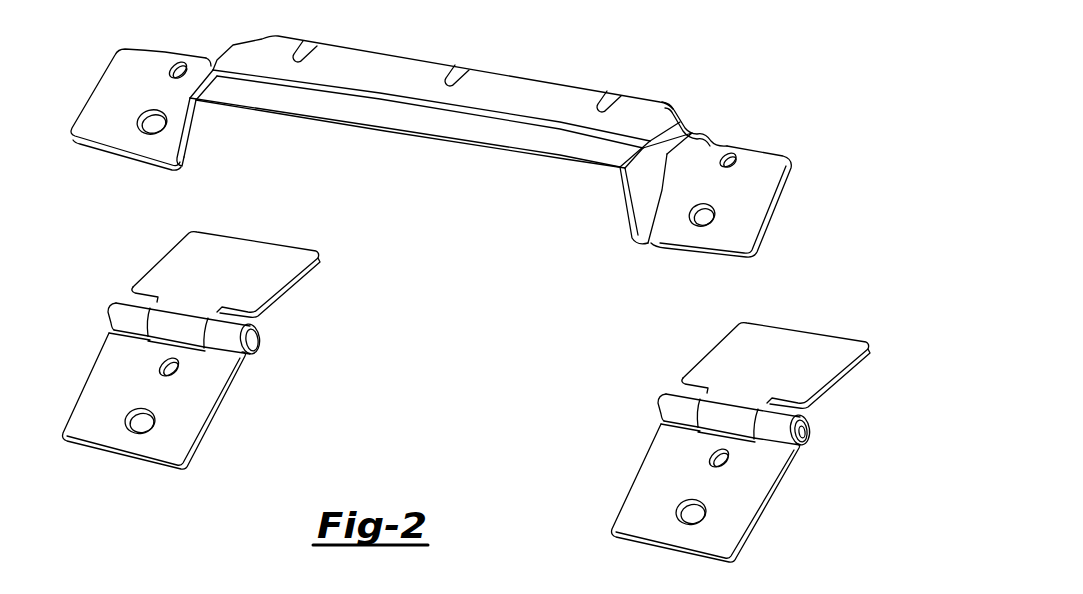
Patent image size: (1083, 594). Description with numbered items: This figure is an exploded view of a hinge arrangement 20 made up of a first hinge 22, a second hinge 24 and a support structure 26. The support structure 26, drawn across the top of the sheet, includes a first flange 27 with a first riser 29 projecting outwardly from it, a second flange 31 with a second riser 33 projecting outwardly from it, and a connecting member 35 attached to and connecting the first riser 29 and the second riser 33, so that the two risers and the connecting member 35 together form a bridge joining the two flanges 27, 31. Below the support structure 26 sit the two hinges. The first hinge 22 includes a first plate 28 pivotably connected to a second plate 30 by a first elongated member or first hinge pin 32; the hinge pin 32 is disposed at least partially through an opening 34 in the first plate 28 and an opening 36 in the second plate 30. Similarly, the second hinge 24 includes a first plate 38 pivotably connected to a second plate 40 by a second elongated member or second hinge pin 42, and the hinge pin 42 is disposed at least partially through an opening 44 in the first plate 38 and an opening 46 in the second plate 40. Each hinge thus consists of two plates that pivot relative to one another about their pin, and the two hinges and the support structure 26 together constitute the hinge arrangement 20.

The hinge arrangement 20 is at (871, 135).
The first hinge 22 is at (291, 378).
The second hinge 24 is at (567, 416).
The support structure 26 is at (585, 57).
The first flange 27 is at (115, 160).
The first plate 28 is at (208, 440).
The first riser 29 is at (193, 124).
The second plate 30 is at (168, 249).
The second flange 31 is at (770, 220).
The first hinge pin 32 is at (257, 342).
The second riser 33 is at (621, 200).
The opening 34 is at (111, 315).
The connecting member 35 is at (427, 137).
The opening 36 is at (118, 332).
The first plate 38 is at (675, 493).
The second plate 40 is at (761, 355).
The second hinge pin 42 is at (643, 398).
The opening 44 is at (808, 426).
The opening 46 is at (674, 426).